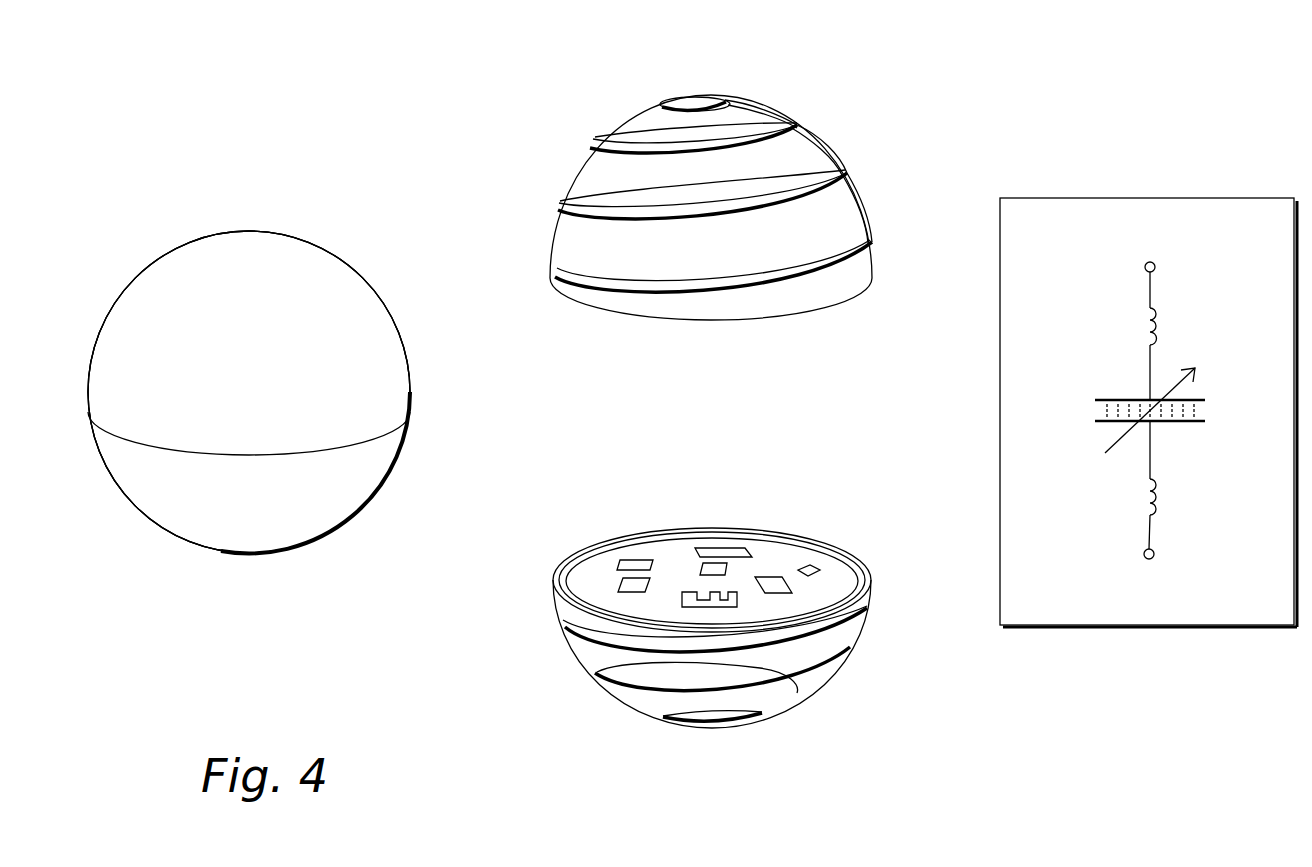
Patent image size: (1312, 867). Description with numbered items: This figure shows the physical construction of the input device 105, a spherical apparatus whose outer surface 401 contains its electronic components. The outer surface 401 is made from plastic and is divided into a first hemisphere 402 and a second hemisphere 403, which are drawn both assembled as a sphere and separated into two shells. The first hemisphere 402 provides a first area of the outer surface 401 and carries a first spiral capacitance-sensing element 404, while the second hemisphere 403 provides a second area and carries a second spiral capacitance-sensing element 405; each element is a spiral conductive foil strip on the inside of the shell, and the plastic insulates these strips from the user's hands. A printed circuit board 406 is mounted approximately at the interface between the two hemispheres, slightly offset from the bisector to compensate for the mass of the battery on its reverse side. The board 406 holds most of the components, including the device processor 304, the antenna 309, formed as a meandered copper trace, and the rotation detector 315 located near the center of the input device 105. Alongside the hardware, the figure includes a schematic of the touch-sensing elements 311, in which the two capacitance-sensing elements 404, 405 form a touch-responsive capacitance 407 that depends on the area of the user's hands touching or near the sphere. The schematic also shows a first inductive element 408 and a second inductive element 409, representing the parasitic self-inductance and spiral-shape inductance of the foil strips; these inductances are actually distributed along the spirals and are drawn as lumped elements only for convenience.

The input device 105 is at (152, 237).
The outer surface 401 is at (307, 238).
The first hemisphere 402 is at (317, 346).
The second hemisphere 403 is at (310, 515).
The first spiral capacitance-sensing element 404 is at (591, 147).
The second spiral capacitance-sensing element 405 is at (615, 690).
The printed circuit board 406 is at (830, 587).
The device processor 304 is at (770, 585).
The antenna 309 is at (690, 592).
The rotation detector 315 is at (712, 565).
The touch-sensing elements schematic 311 is at (1245, 212).
The touch-responsive capacitance 407 is at (1117, 399).
The first inductive element 408 is at (1143, 318).
The second inductive element 409 is at (1143, 492).